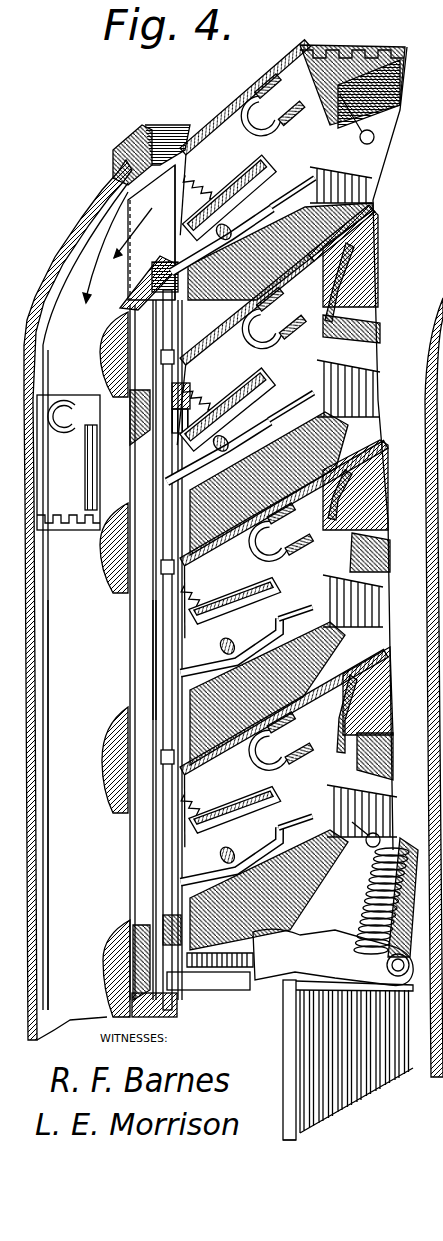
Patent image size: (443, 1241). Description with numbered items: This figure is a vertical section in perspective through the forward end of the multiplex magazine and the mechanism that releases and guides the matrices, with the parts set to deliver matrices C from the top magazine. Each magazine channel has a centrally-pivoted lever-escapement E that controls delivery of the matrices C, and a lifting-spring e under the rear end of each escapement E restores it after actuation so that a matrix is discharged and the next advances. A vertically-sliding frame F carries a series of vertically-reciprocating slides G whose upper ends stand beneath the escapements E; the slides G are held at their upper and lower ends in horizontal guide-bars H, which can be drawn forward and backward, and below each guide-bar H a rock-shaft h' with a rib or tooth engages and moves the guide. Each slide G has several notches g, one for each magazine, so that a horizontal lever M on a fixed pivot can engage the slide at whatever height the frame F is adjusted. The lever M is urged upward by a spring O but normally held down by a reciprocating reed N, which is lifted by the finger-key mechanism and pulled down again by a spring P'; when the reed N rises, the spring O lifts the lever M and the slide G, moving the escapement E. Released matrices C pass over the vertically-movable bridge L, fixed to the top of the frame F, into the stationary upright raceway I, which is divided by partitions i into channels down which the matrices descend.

The matrices C is at (278, 444).
The lifting-spring e is at (287, 192).
The lever-escapement E is at (236, 233).
The bridge L is at (156, 268).
The partition i is at (105, 338).
The notch g is at (161, 358).
The guide-bar H is at (180, 396).
The rock-shaft h' is at (112, 703).
The raceway I is at (66, 805).
The actuating slide G is at (162, 668).
The spring O is at (353, 893).
The lever M is at (252, 990).
The reed N is at (312, 1062).
The sliding frame F is at (180, 1017).
The plate P' is at (277, 1122).